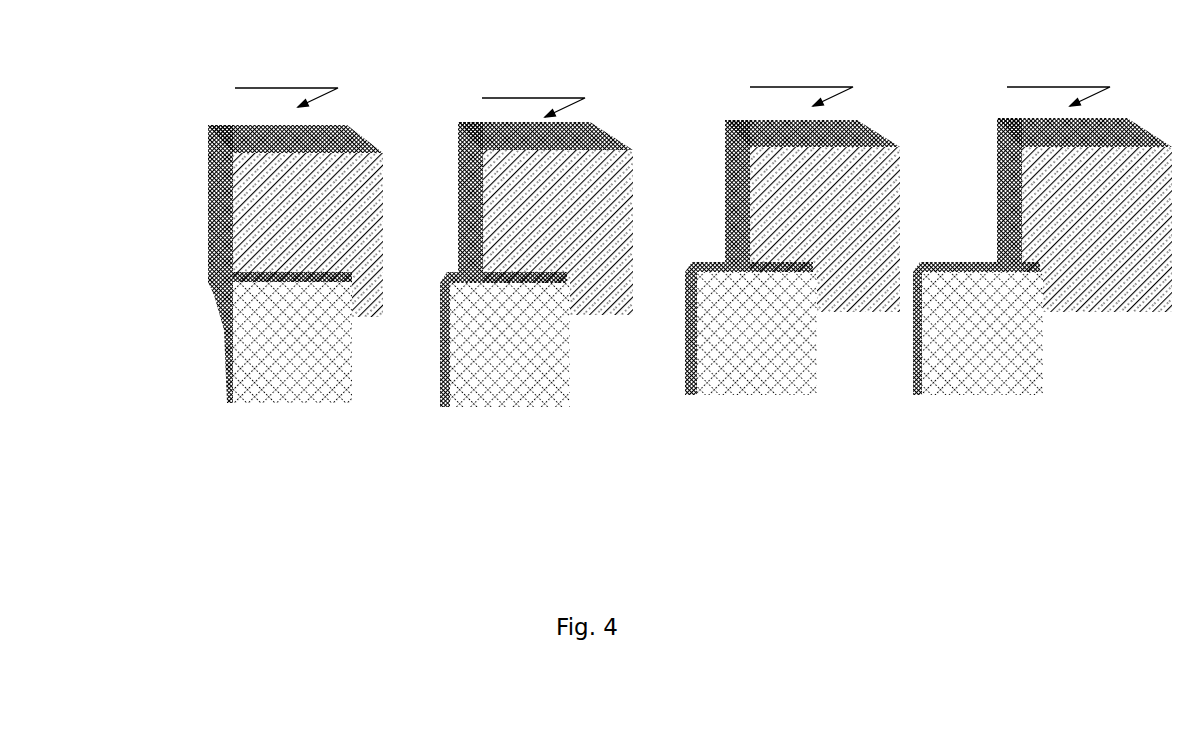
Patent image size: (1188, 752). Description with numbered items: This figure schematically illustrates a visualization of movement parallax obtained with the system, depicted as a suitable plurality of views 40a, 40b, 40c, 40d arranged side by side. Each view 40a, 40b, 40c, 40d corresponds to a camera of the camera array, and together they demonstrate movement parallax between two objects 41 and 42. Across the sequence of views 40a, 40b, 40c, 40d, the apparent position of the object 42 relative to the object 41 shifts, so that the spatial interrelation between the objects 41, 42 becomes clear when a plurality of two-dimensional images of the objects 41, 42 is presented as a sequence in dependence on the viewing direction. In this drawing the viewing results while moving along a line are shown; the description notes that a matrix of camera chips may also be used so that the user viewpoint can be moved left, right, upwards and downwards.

The view 40a is at (286, 72).
The view 40b is at (533, 82).
The view 40c is at (801, 71).
The view 40d is at (1058, 71).
The object 41 is at (212, 202).
The object 42 is at (225, 388).